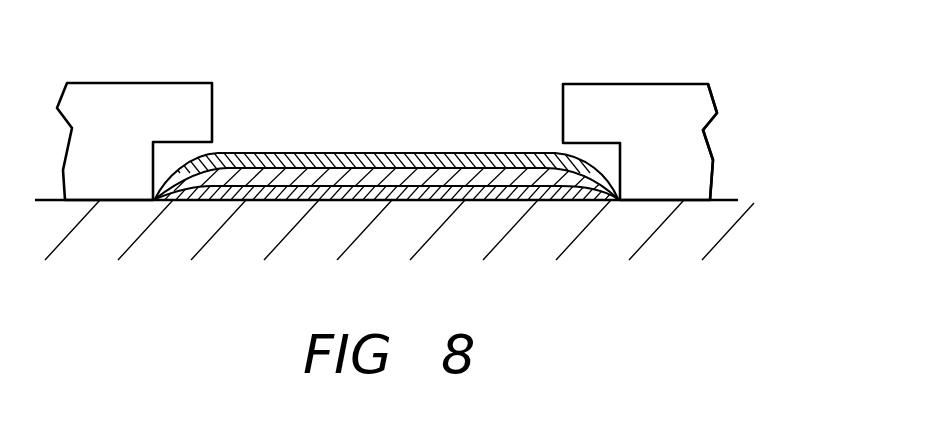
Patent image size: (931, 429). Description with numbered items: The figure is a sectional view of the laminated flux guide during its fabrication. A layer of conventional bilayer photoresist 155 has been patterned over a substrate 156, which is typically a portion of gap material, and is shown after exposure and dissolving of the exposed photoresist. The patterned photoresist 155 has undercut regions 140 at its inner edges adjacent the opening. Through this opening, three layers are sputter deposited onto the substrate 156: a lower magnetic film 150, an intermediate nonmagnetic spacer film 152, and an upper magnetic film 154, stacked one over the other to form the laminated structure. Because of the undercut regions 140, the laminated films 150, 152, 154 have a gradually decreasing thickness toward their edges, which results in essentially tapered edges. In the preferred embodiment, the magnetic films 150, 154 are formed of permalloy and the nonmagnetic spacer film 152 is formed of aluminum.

The undercut regions 140 is at (197, 147).
The magnetic film 150 is at (494, 190).
The intermediate nonmagnetic spacer film 152 is at (377, 177).
The magnetic film 154 is at (293, 158).
The bilayer photoresist layer 155 is at (697, 110).
The substrate 156 is at (718, 234).